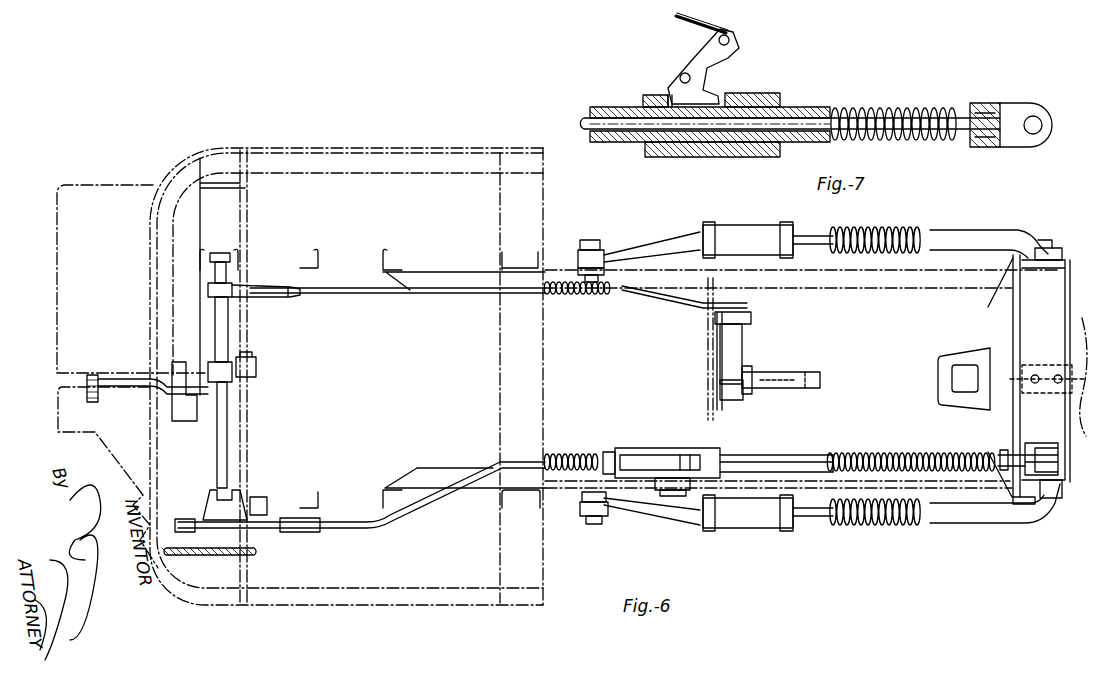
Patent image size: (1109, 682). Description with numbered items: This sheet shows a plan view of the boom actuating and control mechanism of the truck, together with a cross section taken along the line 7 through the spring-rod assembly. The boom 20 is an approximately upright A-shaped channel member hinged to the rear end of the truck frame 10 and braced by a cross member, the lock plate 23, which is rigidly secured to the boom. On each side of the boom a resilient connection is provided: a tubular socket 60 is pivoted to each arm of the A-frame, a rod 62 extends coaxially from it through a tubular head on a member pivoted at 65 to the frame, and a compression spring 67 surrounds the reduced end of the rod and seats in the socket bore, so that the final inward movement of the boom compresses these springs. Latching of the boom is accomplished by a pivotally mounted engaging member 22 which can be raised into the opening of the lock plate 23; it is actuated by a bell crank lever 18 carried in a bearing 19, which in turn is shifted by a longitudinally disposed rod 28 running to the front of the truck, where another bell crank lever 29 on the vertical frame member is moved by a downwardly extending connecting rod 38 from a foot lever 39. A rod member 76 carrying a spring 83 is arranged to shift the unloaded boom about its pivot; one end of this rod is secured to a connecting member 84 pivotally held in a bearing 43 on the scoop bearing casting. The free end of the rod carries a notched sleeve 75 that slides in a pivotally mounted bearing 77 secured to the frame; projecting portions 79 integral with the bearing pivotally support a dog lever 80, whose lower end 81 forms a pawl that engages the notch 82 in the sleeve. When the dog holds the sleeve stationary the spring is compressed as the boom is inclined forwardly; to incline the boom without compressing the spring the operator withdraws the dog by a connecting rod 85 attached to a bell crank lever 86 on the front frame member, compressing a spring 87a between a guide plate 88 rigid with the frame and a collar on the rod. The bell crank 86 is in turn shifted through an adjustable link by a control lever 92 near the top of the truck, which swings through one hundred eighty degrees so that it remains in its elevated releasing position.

In FIG. 6, the section line 7 is at (583, 468).
In FIG. 6, the frame body 10 is at (874, 289).
In FIG. 6, the bell crank lever 18 is at (756, 372).
In FIG. 6, the bearing 19 is at (720, 346).
In FIG. 6, the boom 20 is at (1018, 313).
In FIG. 6, the engaging member 22 is at (790, 390).
In FIG. 6, the lock plate 23 is at (952, 356).
In FIG. 6, the longitudinally disposed rod 28 is at (358, 297).
In FIG. 6, the bell crank lever 29 is at (250, 297).
In FIG. 6, the connecting rod 38 is at (258, 364).
In FIG. 6, the foot lever 39 is at (112, 378).
In FIG. 6, the bearing 43 is at (1047, 510).
In FIG. 6, the tubular socket 60 is at (1000, 229).
In FIG. 6, the rod 62 is at (742, 232).
In FIG. 6, the pivot 65 is at (594, 522).
In FIG. 6, the compression spring 67 is at (887, 226).
In FIG. 7, the notched sleeve 75 is at (602, 108).
In FIG. 6, the notched sleeve 75 is at (738, 455).
In FIG. 7, the rod member 76 is at (578, 123).
In FIG. 7, the bearing 77 is at (692, 158).
In FIG. 6, the bearing 77 is at (688, 450).
In FIG. 7, the projecting portions 79 is at (667, 80).
In FIG. 7, the dog lever 80 is at (722, 57).
In FIG. 6, the dog lever 80 is at (667, 454).
In FIG. 7, the lower end of dog lever 81 is at (742, 97).
In FIG. 7, the notch 82 is at (652, 100).
In FIG. 7, the spring 83 is at (912, 108).
In FIG. 6, the spring 83 is at (832, 452).
In FIG. 7, the connecting member 84 is at (982, 103).
In FIG. 6, the connecting rod 85 is at (408, 512).
In FIG. 6, the bell crank lever 86 is at (300, 533).
In FIG. 6, the spring 87a is at (584, 300).
In FIG. 6, the guide plate 88 is at (547, 256).
In FIG. 6, the control lever 92 is at (183, 558).